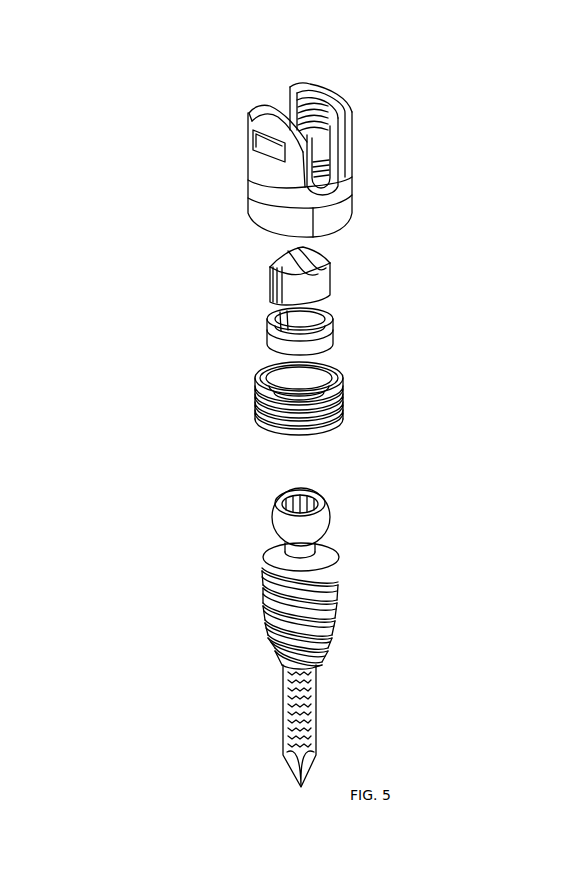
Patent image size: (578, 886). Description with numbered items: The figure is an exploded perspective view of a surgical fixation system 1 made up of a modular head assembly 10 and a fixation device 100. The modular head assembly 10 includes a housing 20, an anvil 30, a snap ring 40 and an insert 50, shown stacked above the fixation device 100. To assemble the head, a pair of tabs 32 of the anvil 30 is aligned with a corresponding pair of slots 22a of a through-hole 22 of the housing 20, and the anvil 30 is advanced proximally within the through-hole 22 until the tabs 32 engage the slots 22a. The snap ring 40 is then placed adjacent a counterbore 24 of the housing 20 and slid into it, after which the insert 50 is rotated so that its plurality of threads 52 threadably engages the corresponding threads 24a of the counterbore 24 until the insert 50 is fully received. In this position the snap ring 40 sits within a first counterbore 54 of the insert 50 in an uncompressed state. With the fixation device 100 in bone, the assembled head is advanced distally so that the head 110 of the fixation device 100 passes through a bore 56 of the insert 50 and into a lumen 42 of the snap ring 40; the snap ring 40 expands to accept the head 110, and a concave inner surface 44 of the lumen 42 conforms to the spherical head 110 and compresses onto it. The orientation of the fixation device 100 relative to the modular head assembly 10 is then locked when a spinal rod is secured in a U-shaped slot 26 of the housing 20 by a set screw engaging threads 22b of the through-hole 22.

The surgical fixation system 1 is at (480, 58).
The modular head assembly 10 is at (177, 102).
The housing 20 is at (395, 212).
The through-hole 22 is at (293, 128).
The slots 22a is at (322, 150).
The threads 22b is at (330, 97).
The counterbore 24 is at (318, 166).
The threads 24a is at (308, 180).
The U-shaped slot 26 is at (268, 98).
The anvil 30 is at (365, 280).
The tabs 32 is at (318, 258).
The snap ring 40 is at (373, 338).
The lumen 42 is at (315, 305).
The concave inner surface 44 is at (320, 323).
The insert 50 is at (364, 415).
The threads 52 is at (255, 412).
The first counterbore 54 is at (317, 368).
The bore 56 is at (305, 398).
The fixation device 100 is at (200, 582).
The head 110 is at (340, 511).